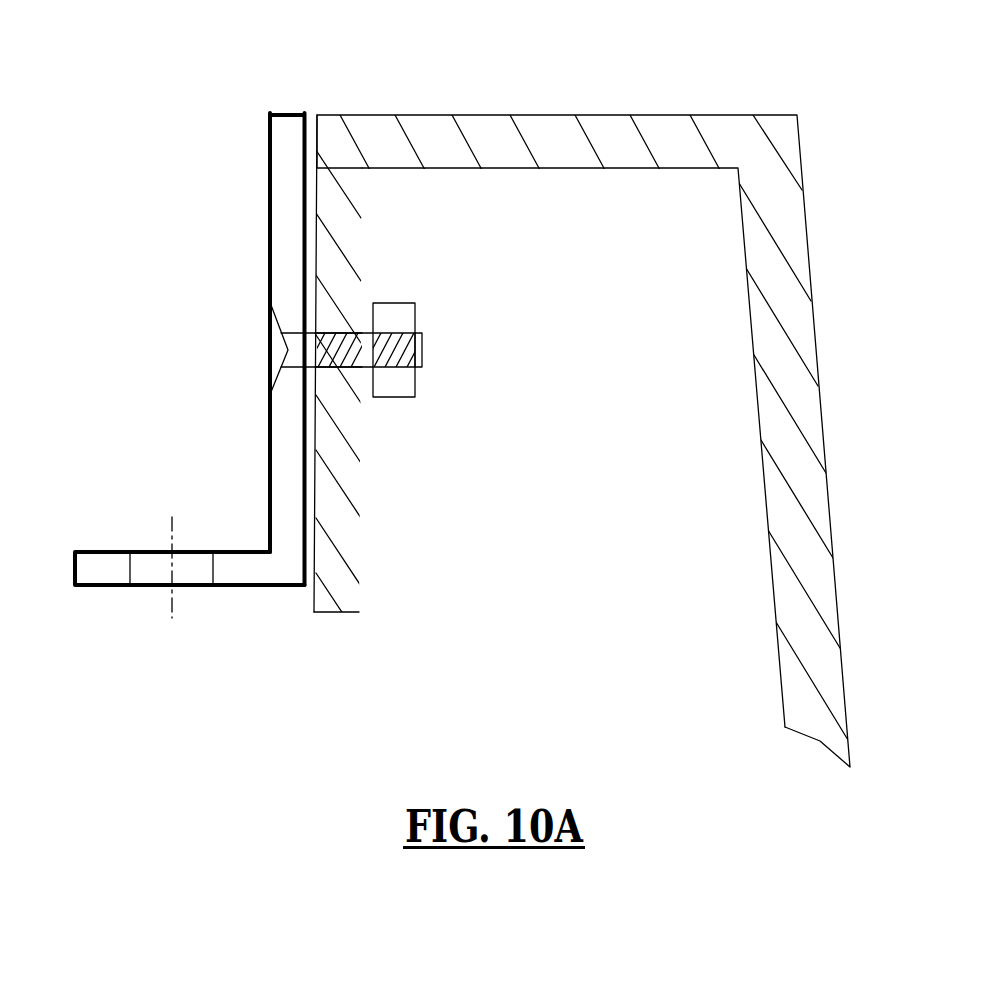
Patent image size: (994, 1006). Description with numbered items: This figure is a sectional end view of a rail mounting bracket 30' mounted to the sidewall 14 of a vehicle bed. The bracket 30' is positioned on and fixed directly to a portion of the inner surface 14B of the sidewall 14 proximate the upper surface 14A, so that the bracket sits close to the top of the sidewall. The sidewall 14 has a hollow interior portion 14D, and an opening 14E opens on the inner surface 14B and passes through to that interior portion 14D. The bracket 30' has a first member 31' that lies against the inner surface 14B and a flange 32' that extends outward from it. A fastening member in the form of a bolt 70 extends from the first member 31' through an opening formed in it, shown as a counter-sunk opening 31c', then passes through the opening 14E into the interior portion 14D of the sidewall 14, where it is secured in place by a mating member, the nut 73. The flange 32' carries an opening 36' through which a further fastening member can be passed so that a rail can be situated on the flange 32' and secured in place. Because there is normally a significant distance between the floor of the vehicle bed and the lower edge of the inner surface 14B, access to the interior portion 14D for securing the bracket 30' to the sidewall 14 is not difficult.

The sidewall 14 is at (792, 302).
The upper surface 14A is at (542, 115).
The inner surface 14B is at (320, 163).
The hollow interior portion 14D is at (600, 280).
The opening 14E is at (334, 330).
The bracket 30' is at (190, 400).
The first member 31' is at (256, 349).
The counter-sunk opening 31c' is at (236, 348).
The flange 32' is at (190, 610).
The opening 36' is at (170, 602).
The bolt 70 is at (428, 348).
The nut 73 is at (393, 312).